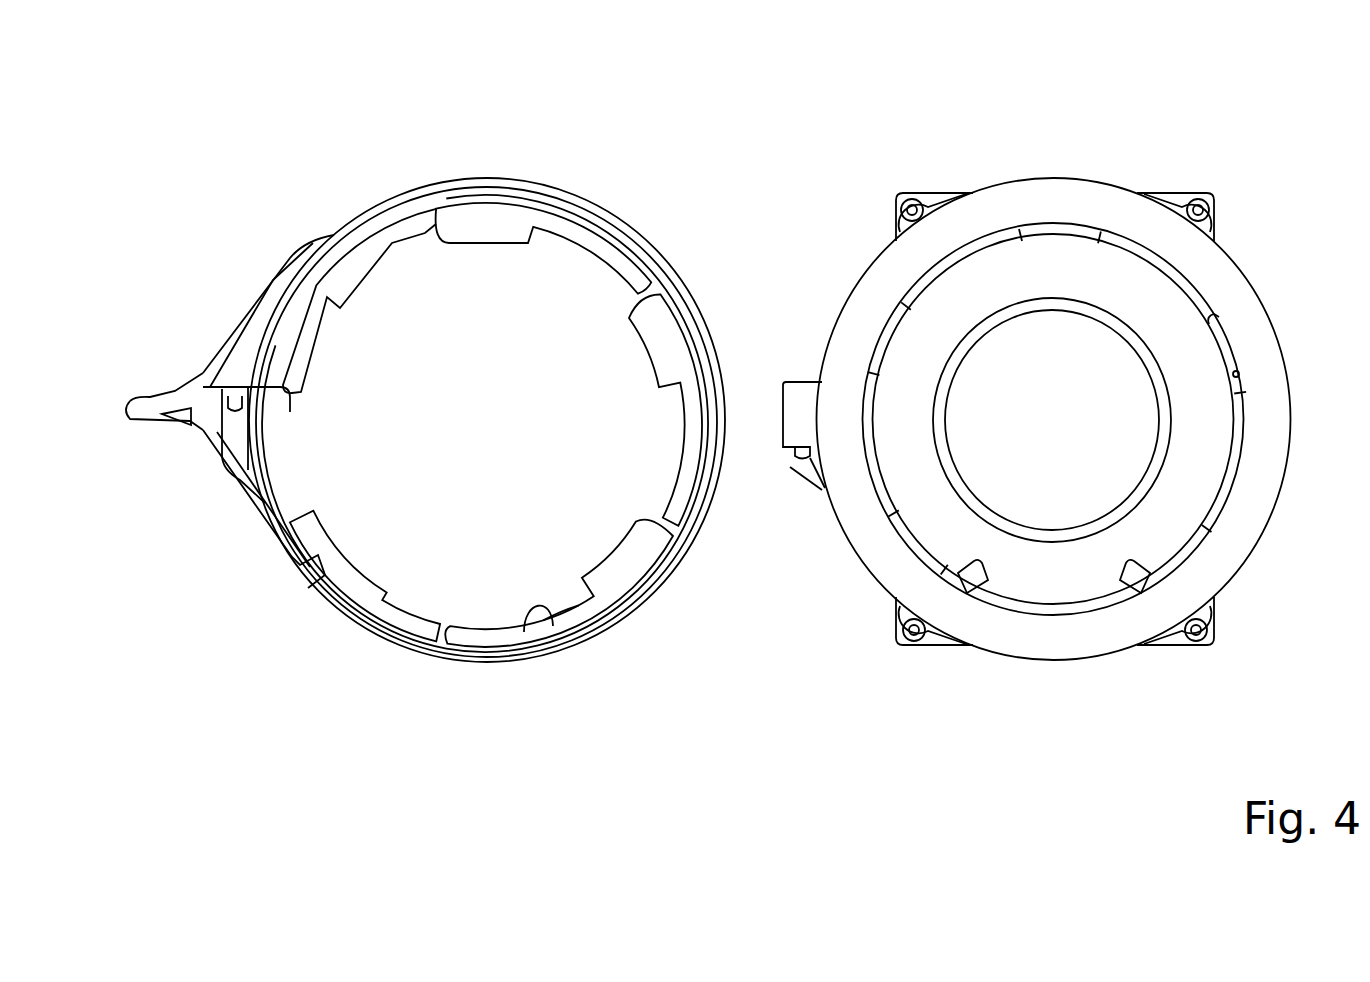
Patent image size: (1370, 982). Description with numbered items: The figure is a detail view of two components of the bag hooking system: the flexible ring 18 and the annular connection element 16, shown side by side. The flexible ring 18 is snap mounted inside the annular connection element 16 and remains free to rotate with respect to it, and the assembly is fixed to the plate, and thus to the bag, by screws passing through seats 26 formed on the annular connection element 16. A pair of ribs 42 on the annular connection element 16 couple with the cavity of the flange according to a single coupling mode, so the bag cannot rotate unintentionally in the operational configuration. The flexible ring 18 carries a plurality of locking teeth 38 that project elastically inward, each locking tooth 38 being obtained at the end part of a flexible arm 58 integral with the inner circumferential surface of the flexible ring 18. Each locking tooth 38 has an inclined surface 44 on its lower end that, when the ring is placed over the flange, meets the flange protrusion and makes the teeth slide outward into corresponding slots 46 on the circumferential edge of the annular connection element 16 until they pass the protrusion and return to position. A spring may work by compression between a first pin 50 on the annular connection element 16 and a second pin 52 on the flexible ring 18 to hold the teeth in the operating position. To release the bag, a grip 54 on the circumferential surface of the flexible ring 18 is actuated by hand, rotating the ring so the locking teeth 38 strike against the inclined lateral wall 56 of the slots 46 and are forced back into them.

The annular connection element 16 is at (1266, 333).
The flexible ring 18 is at (436, 175).
The seats 26 is at (913, 198).
The locking teeth 38 is at (560, 584).
The ribs 42 is at (1132, 562).
The inclined surface 44 is at (617, 552).
The slots 46 is at (1240, 377).
The first pin 50 is at (790, 448).
The second pin 52 is at (233, 410).
The grip 54 is at (152, 403).
The inclined lateral wall 56 is at (1217, 322).
The flexible arm 58 is at (553, 615).